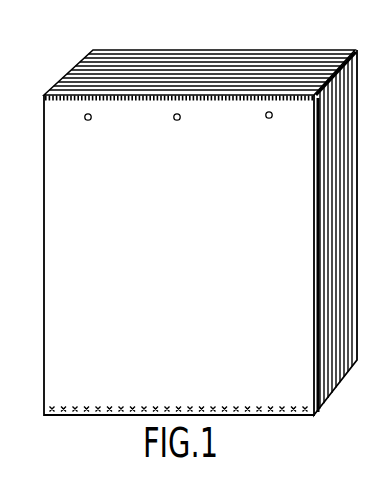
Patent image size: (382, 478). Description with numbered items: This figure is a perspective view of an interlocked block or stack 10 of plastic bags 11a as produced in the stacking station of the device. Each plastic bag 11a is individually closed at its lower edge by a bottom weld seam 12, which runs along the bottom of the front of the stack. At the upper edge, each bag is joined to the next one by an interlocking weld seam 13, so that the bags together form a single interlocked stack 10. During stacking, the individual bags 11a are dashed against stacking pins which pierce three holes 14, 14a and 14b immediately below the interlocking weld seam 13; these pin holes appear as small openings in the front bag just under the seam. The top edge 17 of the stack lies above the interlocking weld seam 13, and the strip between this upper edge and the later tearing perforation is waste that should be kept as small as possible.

The interlocked stack of plastic bags 10 is at (73, 57).
The plastic bag 11a is at (198, 283).
The bottom weld seam 12 is at (283, 410).
The interlocking weld seam 13 is at (225, 97).
The hole 14 is at (89, 120).
The hole 14a is at (177, 120).
The hole 14b is at (268, 118).
The top edge of the stack 17 is at (120, 96).